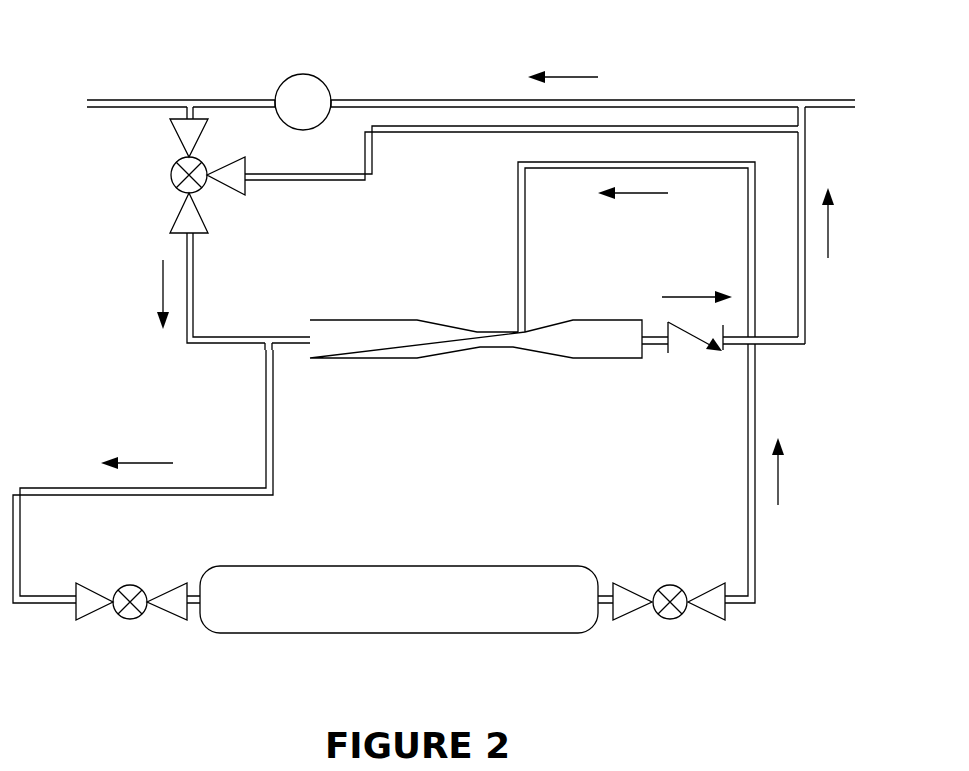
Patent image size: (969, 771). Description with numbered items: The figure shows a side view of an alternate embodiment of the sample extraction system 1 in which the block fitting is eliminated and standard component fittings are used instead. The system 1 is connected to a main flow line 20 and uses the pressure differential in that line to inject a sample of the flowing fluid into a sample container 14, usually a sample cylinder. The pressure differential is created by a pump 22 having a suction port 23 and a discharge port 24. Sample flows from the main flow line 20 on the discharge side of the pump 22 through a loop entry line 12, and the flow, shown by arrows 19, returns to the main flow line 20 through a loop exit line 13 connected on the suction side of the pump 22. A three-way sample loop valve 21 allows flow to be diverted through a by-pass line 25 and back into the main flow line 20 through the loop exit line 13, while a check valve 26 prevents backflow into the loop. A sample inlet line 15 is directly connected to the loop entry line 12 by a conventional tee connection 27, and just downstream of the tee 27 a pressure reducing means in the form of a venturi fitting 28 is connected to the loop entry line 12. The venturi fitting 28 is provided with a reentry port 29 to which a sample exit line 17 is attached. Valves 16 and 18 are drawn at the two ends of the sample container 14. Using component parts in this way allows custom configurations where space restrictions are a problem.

The sample extraction system 1 is at (766, 369).
The loop entry line 12 is at (197, 256).
The loop exit line 13 is at (805, 155).
The sample container 14 is at (385, 565).
The sample inlet line 15 is at (275, 457).
The tank inlet valve 16 is at (135, 585).
The sample exit line 17 is at (757, 400).
The tank outlet valve 18 is at (663, 618).
The arrows 19 is at (573, 77).
The main flow line 20 is at (672, 99).
The sample loop valve 21 is at (197, 156).
The pump 22 is at (303, 74).
The suction port 23 is at (331, 99).
The discharge port 24 is at (276, 99).
The by-pass line 25 is at (377, 160).
The check valve 26 is at (722, 352).
The tee connection 27 is at (272, 346).
The venturi fitting 28 is at (370, 320).
The reentry port 29 is at (527, 327).